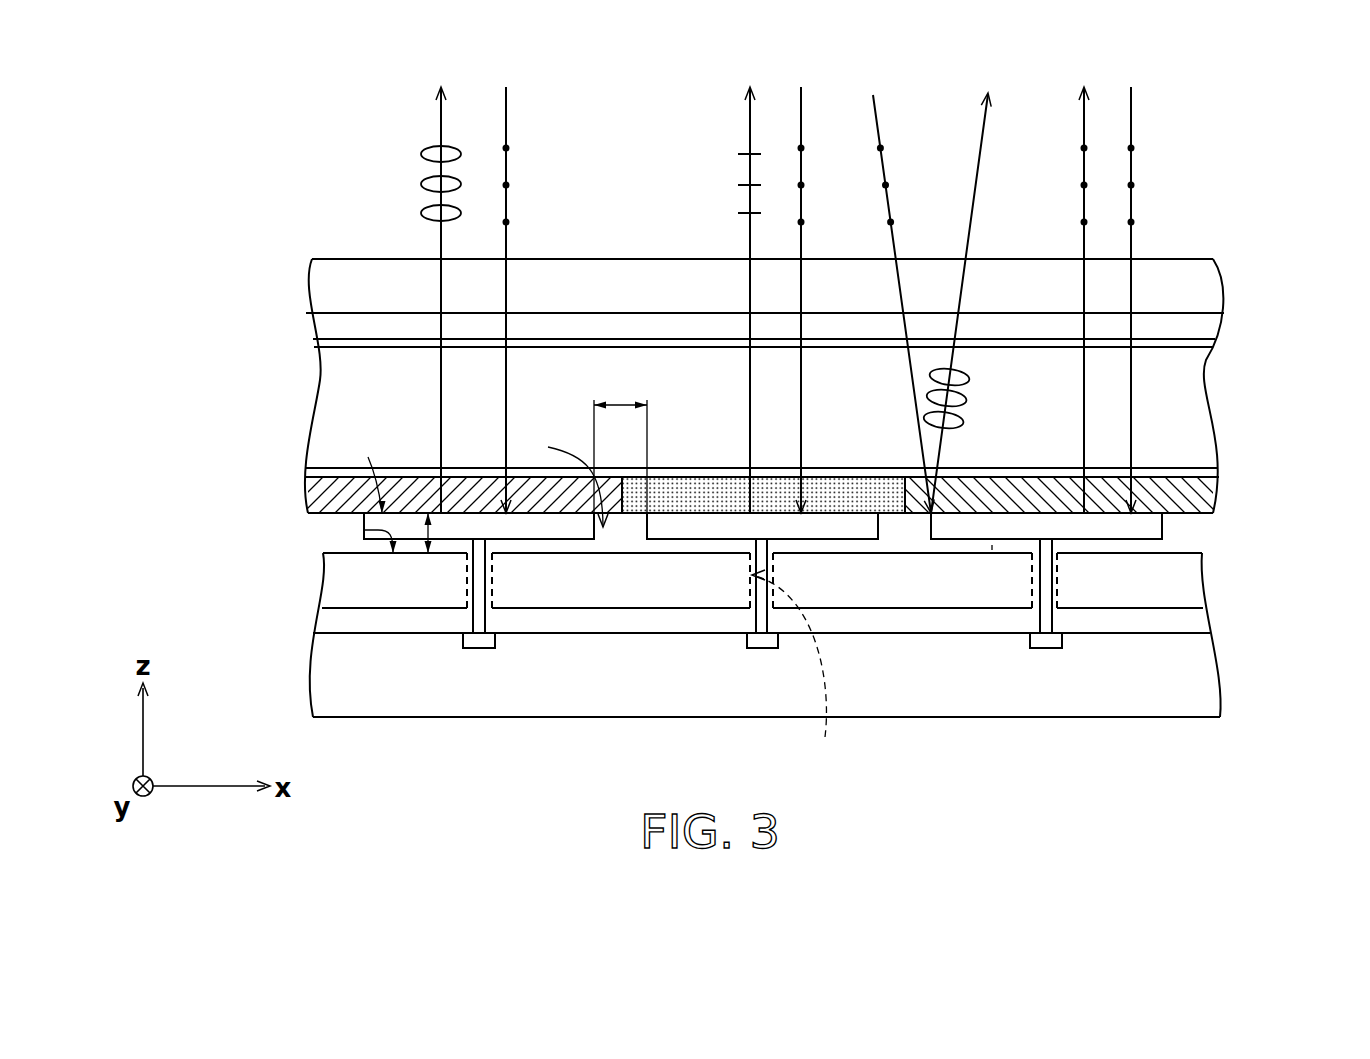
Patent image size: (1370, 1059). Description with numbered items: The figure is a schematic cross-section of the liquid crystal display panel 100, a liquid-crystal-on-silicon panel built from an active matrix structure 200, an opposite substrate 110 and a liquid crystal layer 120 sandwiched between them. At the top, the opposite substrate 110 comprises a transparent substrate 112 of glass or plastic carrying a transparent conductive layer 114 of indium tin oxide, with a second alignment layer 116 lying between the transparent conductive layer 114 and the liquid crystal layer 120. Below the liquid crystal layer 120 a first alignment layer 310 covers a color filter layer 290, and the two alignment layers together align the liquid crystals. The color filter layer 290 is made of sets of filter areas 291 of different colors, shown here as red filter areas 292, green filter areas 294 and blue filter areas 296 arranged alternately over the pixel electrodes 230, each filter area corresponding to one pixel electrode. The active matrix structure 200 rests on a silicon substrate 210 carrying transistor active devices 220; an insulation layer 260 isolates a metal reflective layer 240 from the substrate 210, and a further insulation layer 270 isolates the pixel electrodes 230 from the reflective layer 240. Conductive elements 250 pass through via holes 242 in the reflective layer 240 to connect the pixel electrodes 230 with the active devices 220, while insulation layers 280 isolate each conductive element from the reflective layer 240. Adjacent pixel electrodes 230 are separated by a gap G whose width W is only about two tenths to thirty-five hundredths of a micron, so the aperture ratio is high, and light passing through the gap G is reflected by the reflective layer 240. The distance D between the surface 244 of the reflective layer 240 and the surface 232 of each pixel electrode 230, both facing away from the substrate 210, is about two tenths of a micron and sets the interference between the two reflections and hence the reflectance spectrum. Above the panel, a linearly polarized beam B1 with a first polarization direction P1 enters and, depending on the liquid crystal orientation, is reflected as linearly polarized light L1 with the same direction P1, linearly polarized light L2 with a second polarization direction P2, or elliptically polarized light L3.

The liquid crystal display panel 100 is at (1275, 788).
The opposite substrate 110 is at (297, 283).
The transparent substrate 112 is at (332, 273).
The transparent conductive layer 114 is at (330, 328).
The second alignment layer 116 is at (335, 345).
The liquid crystal layer 120 is at (338, 408).
The active matrix structure 200 is at (295, 620).
The substrate 210 is at (338, 678).
The active devices 220 is at (480, 645).
The pixel electrodes 230 is at (560, 528).
The surface of pixel electrode 232 is at (372, 466).
The reflective layer 240 is at (662, 590).
The via holes 242 is at (797, 669).
The surface of reflective layer 244 is at (363, 530).
The conductive elements 250 is at (478, 617).
The insulation layer 260 is at (1177, 622).
The insulation layer 270 is at (992, 545).
The insulation layers 280 is at (488, 590).
The color filter layer 290 is at (295, 493).
The filter areas 291 is at (763, 495).
The red filter areas 292 is at (323, 502).
The green filter areas 294 is at (845, 497).
The blue filter areas 296 is at (1182, 497).
The first alignment layer 310 is at (320, 472).
The linearly polarized light L1 is at (1082, 122).
The linearly polarized light L2 is at (748, 122).
The elliptically polarized light L3 is at (438, 122).
The linearly polarized beam B1 is at (507, 122).
The first polarization direction P1 is at (507, 187).
The second polarization direction P2 is at (747, 155).
The distance D is at (428, 513).
The gap G is at (571, 473).
The width W is at (620, 451).